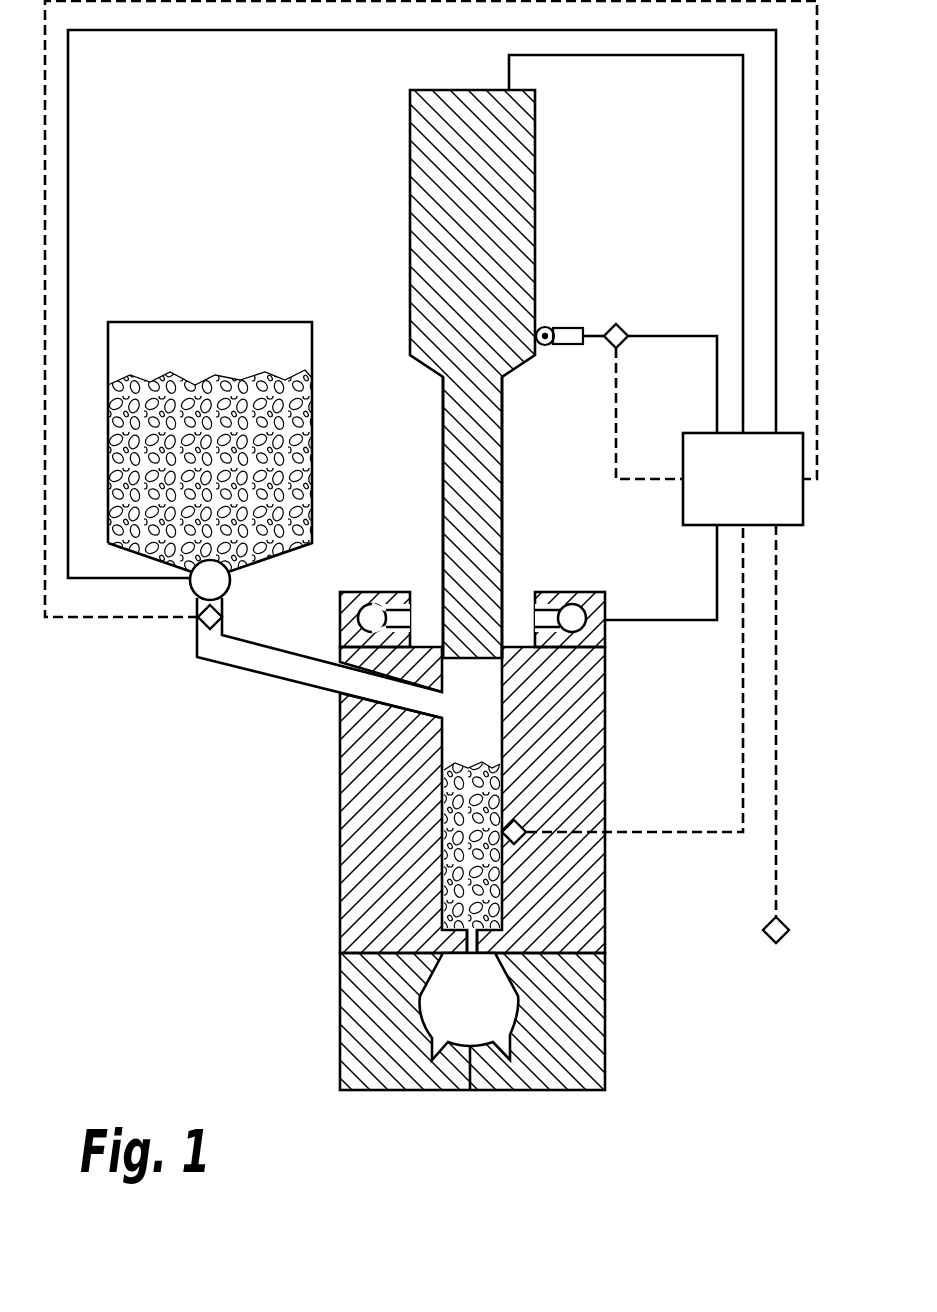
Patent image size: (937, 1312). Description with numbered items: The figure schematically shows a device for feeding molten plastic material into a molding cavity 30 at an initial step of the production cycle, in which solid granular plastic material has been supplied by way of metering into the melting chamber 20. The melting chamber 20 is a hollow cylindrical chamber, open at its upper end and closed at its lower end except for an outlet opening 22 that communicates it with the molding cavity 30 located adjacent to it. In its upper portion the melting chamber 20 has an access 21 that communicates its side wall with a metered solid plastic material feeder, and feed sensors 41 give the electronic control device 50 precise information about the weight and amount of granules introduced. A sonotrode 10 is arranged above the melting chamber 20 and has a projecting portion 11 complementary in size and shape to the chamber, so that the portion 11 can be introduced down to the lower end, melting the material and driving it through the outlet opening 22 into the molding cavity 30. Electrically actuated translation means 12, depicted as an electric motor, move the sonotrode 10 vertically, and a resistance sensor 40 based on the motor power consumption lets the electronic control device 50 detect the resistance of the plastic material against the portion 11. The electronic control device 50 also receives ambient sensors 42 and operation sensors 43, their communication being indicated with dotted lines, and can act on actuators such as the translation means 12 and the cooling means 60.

The sonotrode 10 is at (410, 374).
The projecting portion 11 is at (443, 485).
The translation means 12 is at (556, 328).
The melting chamber 20 is at (480, 720).
The access 21 is at (382, 720).
The outlet opening 22 is at (462, 935).
The molding cavity 30 is at (503, 1007).
The resistance sensor 40 is at (616, 324).
The feed sensors 41 is at (200, 628).
The ambient sensors 42 is at (762, 931).
The operation sensors 43 is at (527, 842).
The electronic control device 50 is at (743, 479).
The cooling means 60 is at (372, 592).